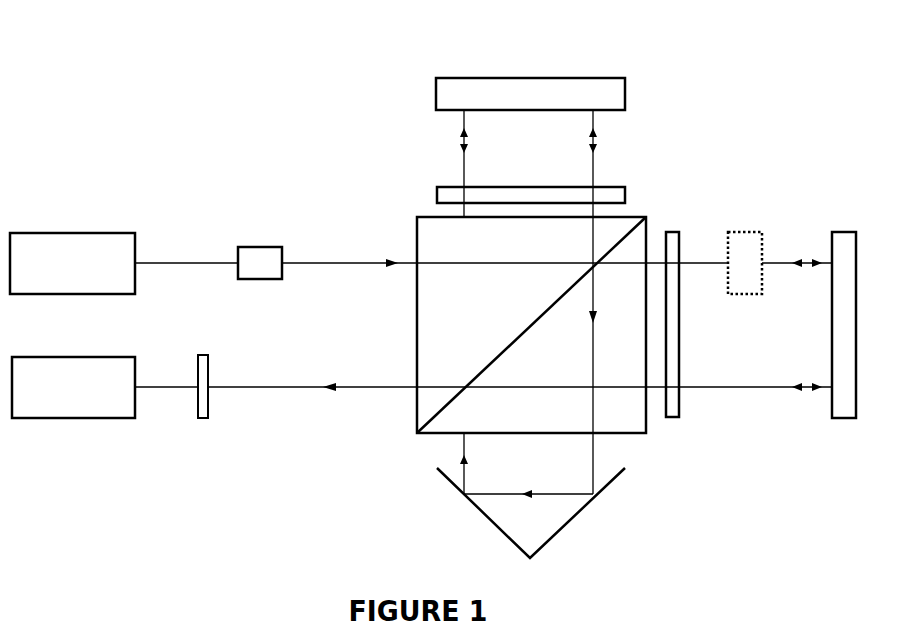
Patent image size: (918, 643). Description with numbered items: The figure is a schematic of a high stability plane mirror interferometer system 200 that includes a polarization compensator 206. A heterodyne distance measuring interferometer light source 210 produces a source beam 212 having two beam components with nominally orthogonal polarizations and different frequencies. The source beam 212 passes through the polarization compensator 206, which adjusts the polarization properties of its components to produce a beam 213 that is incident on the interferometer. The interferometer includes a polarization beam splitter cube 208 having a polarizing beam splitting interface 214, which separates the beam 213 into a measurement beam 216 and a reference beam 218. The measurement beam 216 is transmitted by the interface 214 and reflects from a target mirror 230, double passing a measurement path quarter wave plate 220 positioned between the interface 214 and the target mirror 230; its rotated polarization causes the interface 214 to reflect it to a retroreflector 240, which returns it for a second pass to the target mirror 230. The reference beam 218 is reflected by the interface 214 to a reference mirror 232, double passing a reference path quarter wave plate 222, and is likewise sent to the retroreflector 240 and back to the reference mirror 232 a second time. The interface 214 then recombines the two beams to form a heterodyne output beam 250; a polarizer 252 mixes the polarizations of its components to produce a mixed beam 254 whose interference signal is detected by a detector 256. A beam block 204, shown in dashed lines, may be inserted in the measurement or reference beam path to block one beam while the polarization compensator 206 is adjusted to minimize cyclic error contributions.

The high stability plane mirror interferometer system 200 is at (298, 62).
The beam block 204 is at (748, 232).
The polarization compensator 206 is at (258, 247).
The polarization beam splitter cube 208 is at (638, 433).
The heterodyne distance measuring interferometer light source 210 is at (72, 263).
The source beam 212 is at (167, 263).
The beam 213 is at (334, 263).
The polarizing beam splitting interface 214 is at (519, 340).
The measurement beam 216 is at (610, 268).
The reference beam 218 is at (592, 249).
The measurement path quarter wave plate 220 is at (673, 232).
The reference path quarter wave plate 222 is at (612, 187).
The target mirror 230 is at (843, 232).
The reference mirror 232 is at (608, 78).
The retroreflector 240 is at (562, 530).
The heterodyne output beam 250 is at (373, 387).
The polarizer 252 is at (202, 355).
The mixed beam 254 is at (153, 387).
The detector 256 is at (73, 387).